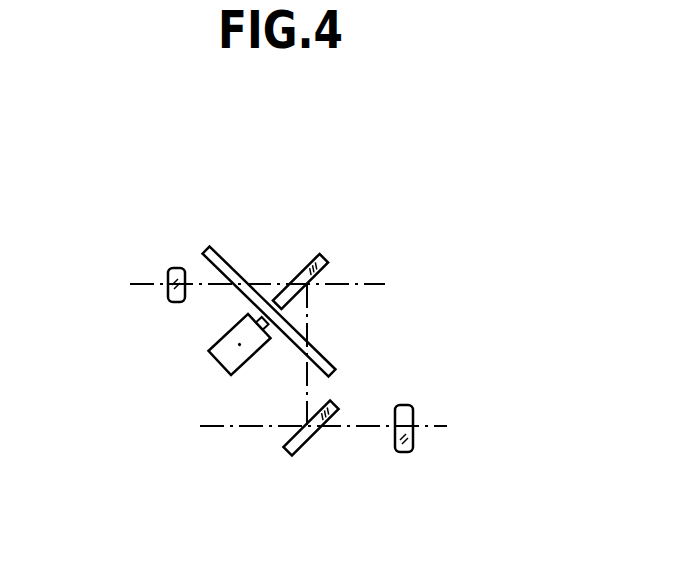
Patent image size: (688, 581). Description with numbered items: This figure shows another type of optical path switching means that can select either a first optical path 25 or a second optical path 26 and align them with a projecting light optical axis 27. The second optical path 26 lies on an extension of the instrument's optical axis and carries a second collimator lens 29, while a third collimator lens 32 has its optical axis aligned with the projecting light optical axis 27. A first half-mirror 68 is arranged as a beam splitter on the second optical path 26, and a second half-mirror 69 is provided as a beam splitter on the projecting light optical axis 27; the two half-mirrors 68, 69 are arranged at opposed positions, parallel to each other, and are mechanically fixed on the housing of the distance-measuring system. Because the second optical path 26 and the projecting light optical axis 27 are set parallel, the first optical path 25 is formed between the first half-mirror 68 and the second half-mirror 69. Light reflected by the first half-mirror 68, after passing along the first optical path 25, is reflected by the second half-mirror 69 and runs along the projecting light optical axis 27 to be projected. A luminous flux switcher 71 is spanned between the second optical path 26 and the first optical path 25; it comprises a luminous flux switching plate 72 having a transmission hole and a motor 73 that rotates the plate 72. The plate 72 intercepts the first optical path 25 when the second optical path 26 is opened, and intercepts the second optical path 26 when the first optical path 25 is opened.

The first optical path 25 is at (307, 329).
The second optical path 26 is at (140, 287).
The projecting light optical axis 27 is at (220, 432).
The second collimator lens 29 is at (172, 268).
The third collimator lens 32 is at (413, 450).
The first half-mirror 68 is at (303, 262).
The second half-mirror 69 is at (317, 440).
The luminous flux switcher 71 is at (259, 291).
The luminous flux switching plate 72 is at (313, 360).
The motor 73 is at (218, 366).